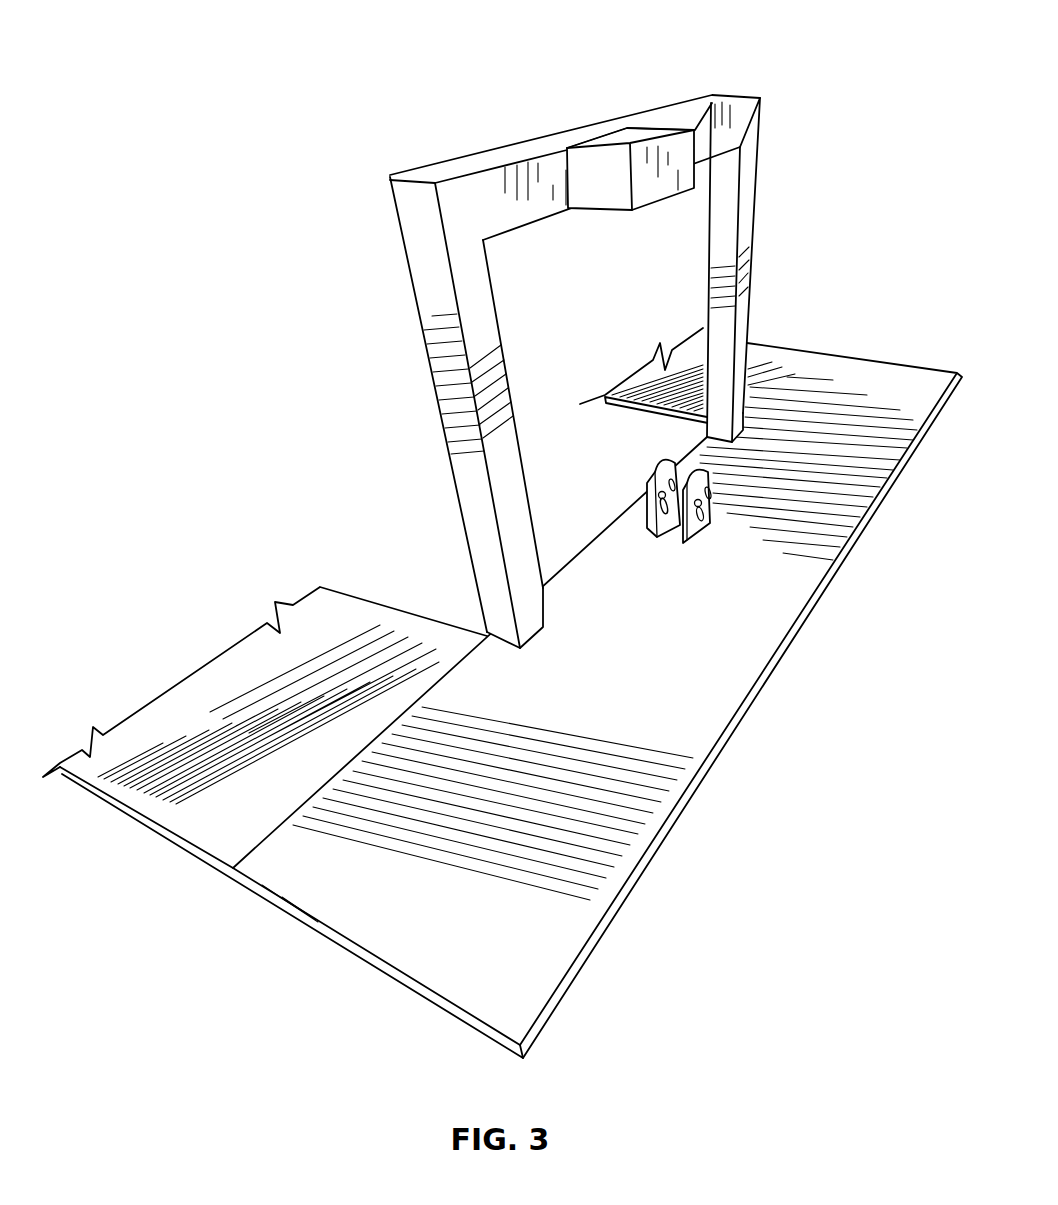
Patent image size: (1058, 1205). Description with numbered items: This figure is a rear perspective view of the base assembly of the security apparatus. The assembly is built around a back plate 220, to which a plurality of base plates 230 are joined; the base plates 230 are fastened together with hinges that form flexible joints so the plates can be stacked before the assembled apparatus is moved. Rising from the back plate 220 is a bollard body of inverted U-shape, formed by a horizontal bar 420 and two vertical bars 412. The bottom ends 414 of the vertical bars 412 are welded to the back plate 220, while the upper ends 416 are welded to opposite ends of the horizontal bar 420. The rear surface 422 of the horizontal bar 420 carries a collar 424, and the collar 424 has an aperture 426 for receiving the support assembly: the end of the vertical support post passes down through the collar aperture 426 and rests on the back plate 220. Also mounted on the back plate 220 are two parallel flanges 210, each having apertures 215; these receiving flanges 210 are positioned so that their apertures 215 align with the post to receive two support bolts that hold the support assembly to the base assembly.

The flange 210 is at (697, 465).
The aperture 215 is at (685, 542).
The back plate 220 is at (730, 689).
The base plate 230 is at (688, 352).
The vertical bar 412 is at (450, 448).
The bottom end 414 is at (505, 628).
The upper end 416 is at (402, 207).
The horizontal bar 420 is at (458, 160).
The rear surface 422 is at (516, 222).
The collar 424 is at (600, 184).
The aperture 426 is at (617, 137).